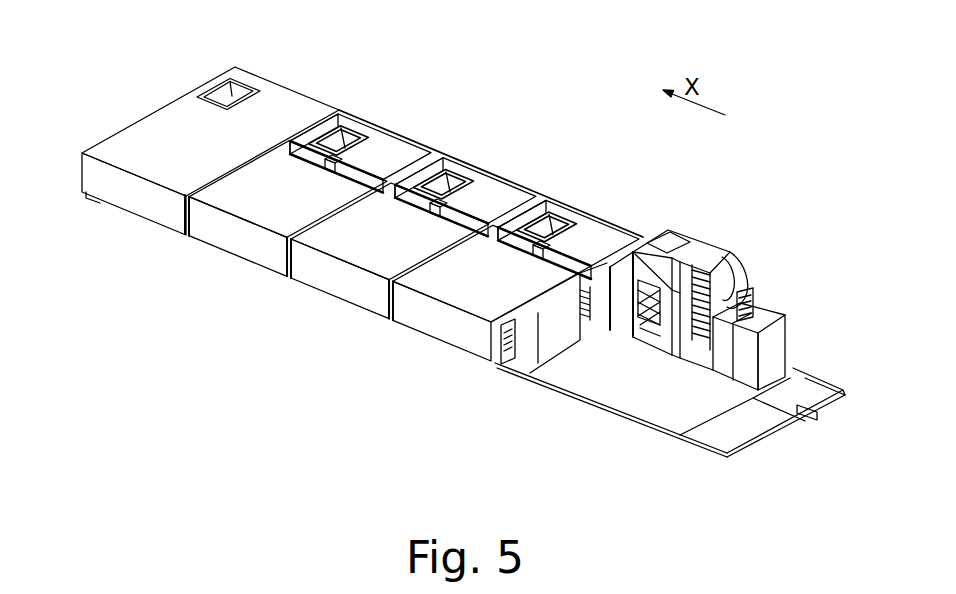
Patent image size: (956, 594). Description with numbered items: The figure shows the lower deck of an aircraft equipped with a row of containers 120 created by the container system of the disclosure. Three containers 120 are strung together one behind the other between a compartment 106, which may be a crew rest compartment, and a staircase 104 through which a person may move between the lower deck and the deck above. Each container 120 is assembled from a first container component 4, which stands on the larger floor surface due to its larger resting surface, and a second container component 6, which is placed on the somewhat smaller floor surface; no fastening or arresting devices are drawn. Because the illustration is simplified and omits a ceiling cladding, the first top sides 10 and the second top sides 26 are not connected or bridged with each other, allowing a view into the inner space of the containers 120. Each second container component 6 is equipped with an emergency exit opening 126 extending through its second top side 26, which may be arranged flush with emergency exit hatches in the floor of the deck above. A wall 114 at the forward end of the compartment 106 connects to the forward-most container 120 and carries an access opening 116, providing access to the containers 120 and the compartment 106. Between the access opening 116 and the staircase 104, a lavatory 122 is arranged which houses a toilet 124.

The first container component 4 is at (388, 296).
The second container component 6 is at (468, 155).
The first top side 10 is at (388, 296).
The second top side 26 is at (468, 155).
The staircase 104 is at (674, 334).
The compartment 106 is at (270, 115).
The wall 114 is at (528, 346).
The access opening 116 is at (612, 248).
The container 120 is at (254, 265).
The lavatory 122 is at (633, 327).
The toilet 124 is at (652, 338).
The emergency exit opening 126 is at (334, 125).